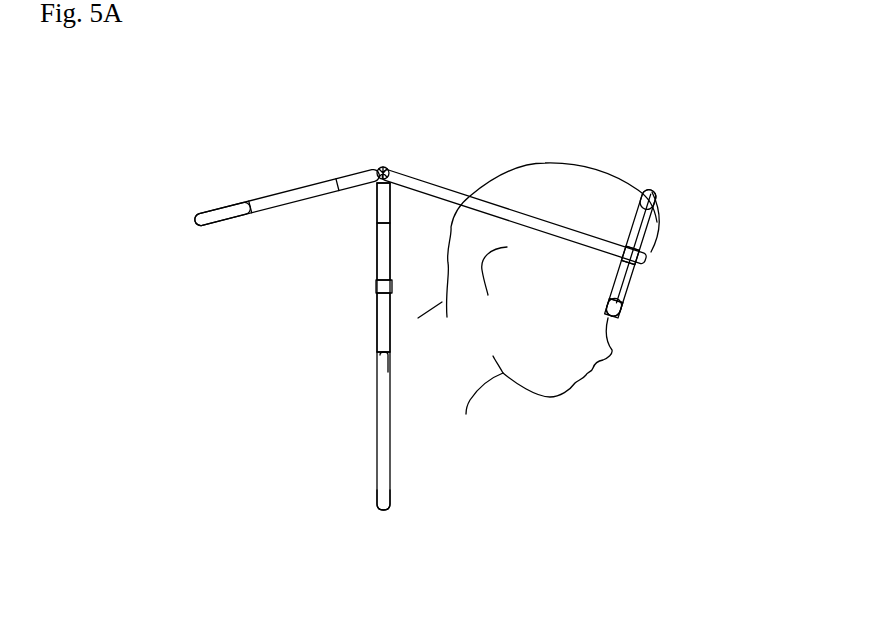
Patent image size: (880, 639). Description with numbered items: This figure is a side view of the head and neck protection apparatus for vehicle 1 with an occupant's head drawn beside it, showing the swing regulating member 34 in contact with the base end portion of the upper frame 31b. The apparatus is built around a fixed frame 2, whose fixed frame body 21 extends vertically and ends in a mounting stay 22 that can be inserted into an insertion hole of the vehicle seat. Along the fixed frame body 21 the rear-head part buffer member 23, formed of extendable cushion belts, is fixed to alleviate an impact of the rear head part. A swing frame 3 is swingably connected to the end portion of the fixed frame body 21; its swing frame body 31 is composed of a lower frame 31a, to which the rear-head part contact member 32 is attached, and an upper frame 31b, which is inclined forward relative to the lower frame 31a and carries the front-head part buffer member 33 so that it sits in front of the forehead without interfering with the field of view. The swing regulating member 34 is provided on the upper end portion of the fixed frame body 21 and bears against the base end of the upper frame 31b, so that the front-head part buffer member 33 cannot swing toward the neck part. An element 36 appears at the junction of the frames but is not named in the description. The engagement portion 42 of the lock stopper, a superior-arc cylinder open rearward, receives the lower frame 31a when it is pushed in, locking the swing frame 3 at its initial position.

The head and neck protection apparatus for vehicle 1 is at (735, 172).
The fixed frame 2 is at (364, 399).
The swing frame 3 is at (368, 162).
The fixed frame body 21 is at (390, 355).
The mounting stay 22 is at (383, 512).
The rear-head part buffer member 23 is at (377, 252).
The swing frame body 31 is at (433, 182).
The lower frame 31a is at (212, 212).
The upper frame 31b is at (660, 190).
The rear-head part contact member 32 is at (288, 191).
The front-head part buffer member 33 is at (661, 247).
The swing regulating member 34 is at (392, 190).
The pivot 36 is at (381, 165).
The engagement portion 42 is at (377, 288).